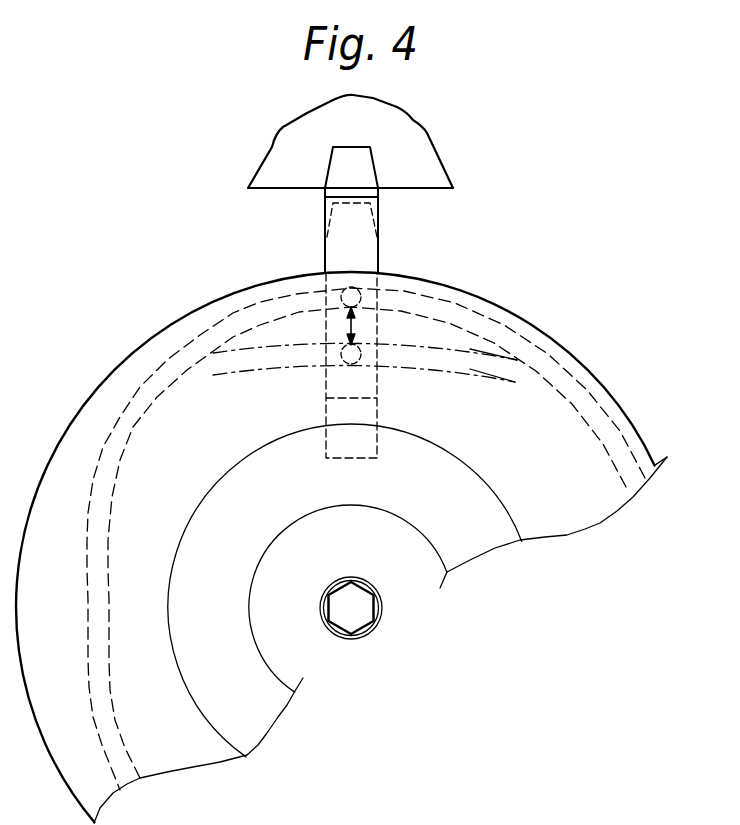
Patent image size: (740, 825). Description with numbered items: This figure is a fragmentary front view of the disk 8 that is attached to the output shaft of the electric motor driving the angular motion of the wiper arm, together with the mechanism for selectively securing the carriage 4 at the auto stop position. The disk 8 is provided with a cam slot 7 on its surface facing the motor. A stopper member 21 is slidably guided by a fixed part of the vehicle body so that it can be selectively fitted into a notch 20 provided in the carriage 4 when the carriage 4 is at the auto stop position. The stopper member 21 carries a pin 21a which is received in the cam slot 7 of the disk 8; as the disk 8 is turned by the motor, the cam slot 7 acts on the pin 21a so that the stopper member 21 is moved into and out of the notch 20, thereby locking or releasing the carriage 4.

The carriage 4 is at (410, 136).
The notch 20 is at (350, 148).
The stopper member 21 is at (376, 195).
The pin 21a is at (361, 355).
The disk 8 is at (533, 323).
The cam slot 7 is at (606, 412).